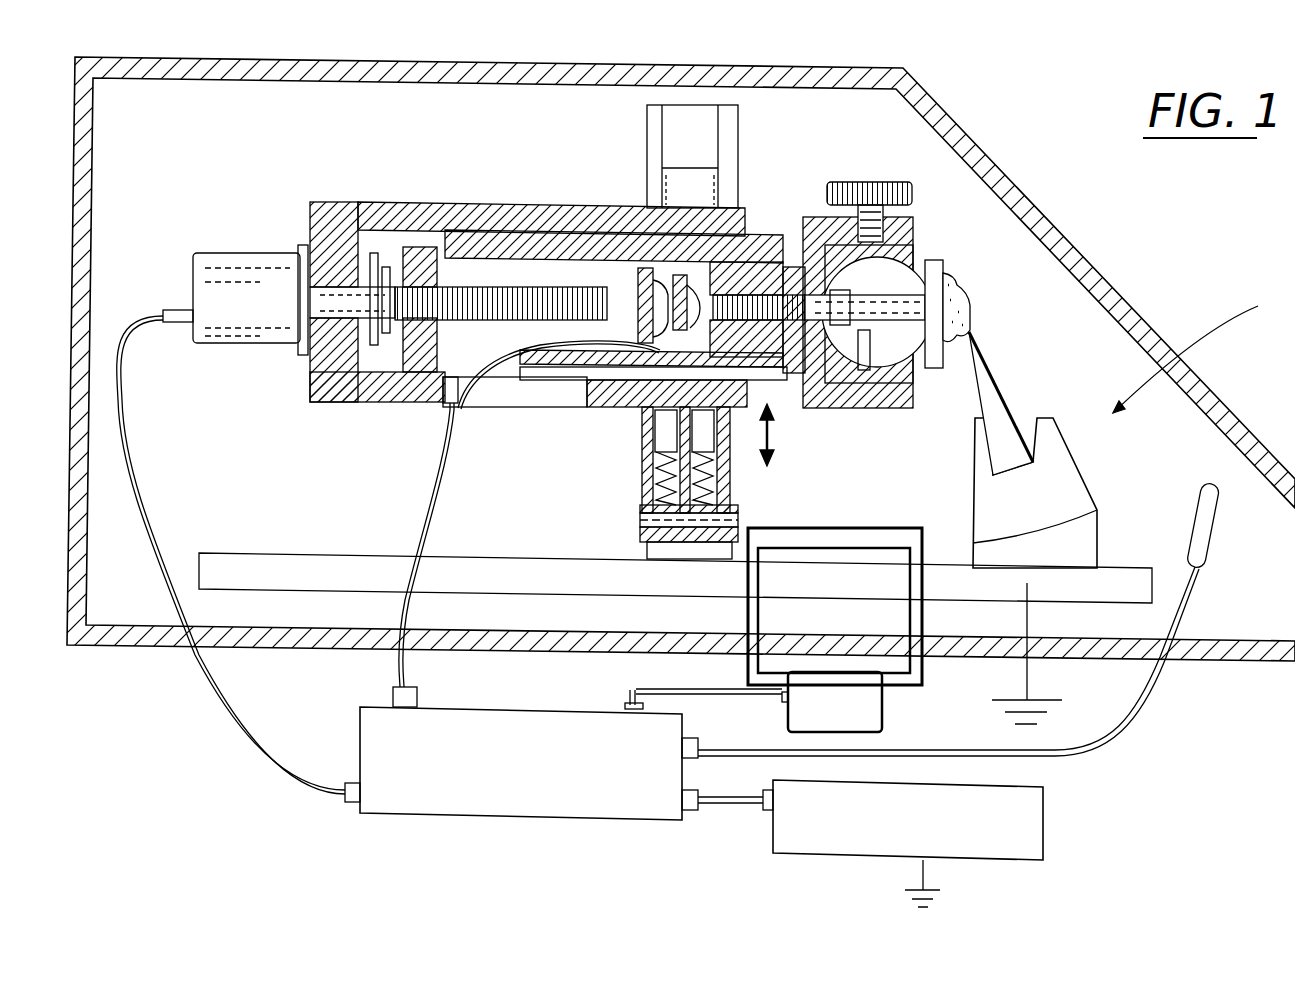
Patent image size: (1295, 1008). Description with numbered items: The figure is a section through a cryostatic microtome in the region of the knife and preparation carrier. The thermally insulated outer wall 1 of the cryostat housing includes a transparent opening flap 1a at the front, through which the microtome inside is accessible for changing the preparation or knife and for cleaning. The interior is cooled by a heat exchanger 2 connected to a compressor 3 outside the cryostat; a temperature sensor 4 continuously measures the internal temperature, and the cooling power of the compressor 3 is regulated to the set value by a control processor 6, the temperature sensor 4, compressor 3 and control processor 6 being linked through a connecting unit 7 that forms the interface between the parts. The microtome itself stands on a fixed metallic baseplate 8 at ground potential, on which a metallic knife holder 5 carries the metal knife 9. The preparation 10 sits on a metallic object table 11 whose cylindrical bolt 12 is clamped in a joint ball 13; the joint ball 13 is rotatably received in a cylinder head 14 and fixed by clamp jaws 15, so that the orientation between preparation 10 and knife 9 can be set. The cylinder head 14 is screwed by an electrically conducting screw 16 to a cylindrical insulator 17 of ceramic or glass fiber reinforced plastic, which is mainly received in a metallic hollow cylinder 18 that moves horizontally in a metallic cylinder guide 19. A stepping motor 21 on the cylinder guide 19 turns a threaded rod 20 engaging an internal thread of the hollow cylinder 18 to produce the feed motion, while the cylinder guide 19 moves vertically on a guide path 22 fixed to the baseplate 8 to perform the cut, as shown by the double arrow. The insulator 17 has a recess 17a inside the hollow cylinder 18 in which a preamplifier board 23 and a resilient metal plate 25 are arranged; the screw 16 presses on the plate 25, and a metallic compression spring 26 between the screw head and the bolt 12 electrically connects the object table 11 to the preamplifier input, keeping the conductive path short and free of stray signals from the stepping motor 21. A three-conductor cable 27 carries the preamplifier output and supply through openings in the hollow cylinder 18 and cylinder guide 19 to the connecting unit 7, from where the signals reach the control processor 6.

The insulating outer wall 1 is at (583, 63).
The opening flap 1a is at (985, 166).
The heat exchanger 2 is at (800, 540).
The compressor 3 is at (883, 705).
The temperature sensor 4 is at (1205, 487).
The knife holder 5 is at (1075, 483).
The control processor 6 is at (1033, 830).
The connecting unit 7 is at (360, 742).
The baseplate 8 is at (543, 557).
The knife 9 is at (985, 380).
The preparation 10 is at (962, 305).
The object table 11 is at (937, 260).
The cylindrical bolt 12 is at (917, 340).
The joint ball 13 is at (892, 342).
The cylinder head 14 is at (836, 405).
The clamp jaws 15 is at (917, 250).
The screw 16 is at (825, 420).
The insulator 17 is at (773, 252).
The recess 17a is at (665, 300).
The hollow cylinder 18 is at (483, 243).
The cylinder guide 19 is at (428, 203).
The threaded rod 20 is at (507, 285).
The stepping motor 21 is at (247, 258).
The guide path 22 is at (731, 151).
The board 23 is at (633, 290).
The resilient metal plate 25 is at (760, 267).
The compression spring 26 is at (892, 362).
The three-conductor cable 27 is at (430, 495).